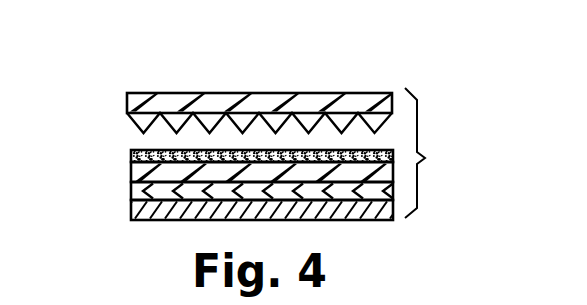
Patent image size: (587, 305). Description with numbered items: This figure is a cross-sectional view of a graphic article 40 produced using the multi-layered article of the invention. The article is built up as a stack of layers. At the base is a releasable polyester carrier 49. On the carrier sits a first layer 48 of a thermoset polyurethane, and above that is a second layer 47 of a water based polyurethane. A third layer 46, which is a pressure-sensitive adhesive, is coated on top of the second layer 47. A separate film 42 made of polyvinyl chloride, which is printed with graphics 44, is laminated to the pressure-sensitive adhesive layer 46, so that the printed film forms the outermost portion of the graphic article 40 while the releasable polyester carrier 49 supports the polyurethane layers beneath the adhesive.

The graphic article 40 is at (273, 148).
The separate film 42 is at (262, 99).
The graphics 44 is at (128, 127).
The third layer 46 is at (130, 153).
The second layer 47 is at (130, 171).
The first layer 48 is at (130, 196).
The releasable polyester carrier 49 is at (130, 213).